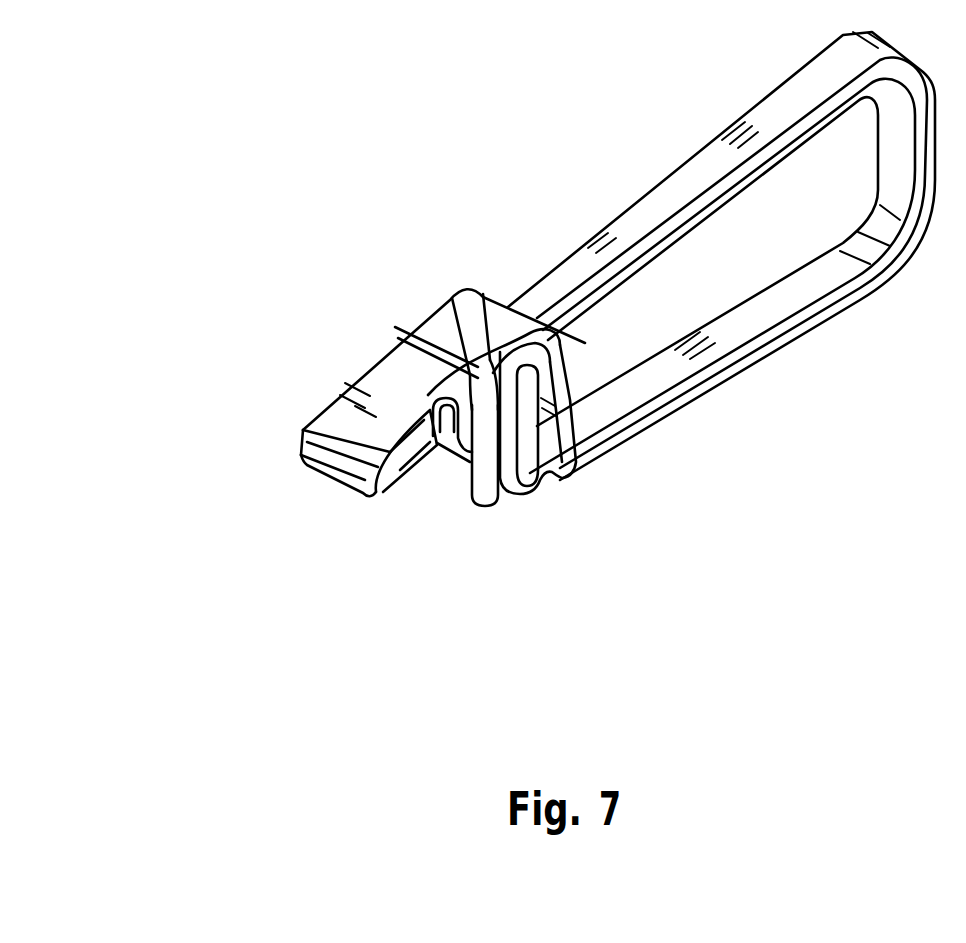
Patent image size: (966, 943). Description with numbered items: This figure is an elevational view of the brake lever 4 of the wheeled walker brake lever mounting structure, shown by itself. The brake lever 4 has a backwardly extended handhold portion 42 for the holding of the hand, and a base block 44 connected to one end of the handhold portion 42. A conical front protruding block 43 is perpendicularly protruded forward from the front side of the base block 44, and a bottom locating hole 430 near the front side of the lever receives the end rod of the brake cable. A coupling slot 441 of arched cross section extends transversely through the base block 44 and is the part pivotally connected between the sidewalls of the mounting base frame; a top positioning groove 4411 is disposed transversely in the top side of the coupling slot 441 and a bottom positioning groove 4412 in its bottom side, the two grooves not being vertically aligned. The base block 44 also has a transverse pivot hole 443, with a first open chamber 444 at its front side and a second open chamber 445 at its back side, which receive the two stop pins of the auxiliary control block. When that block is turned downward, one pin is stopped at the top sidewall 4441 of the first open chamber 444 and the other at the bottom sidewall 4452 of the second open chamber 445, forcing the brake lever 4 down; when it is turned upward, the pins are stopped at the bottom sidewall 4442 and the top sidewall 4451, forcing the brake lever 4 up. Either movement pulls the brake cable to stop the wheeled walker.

The brake lever 4 is at (676, 118).
The handhold portion 42 is at (617, 222).
The conical front protruding block 43 is at (337, 463).
The base block 44 is at (420, 320).
The bottom locating hole 430 is at (452, 440).
The coupling slot 441 is at (517, 433).
The transverse pivot hole 443 is at (440, 403).
The first open chamber 444 is at (385, 447).
The second open chamber 445 is at (450, 297).
The top positioning groove 4411 is at (562, 350).
The bottom positioning groove 4412 is at (503, 490).
The top sidewall of the first open chamber 4441 is at (303, 454).
The bottom sidewall of the first open chamber 4442 is at (410, 487).
The top sidewall of the second open chamber 4451 is at (486, 292).
The bottom sidewall of the second open chamber 4452 is at (470, 470).